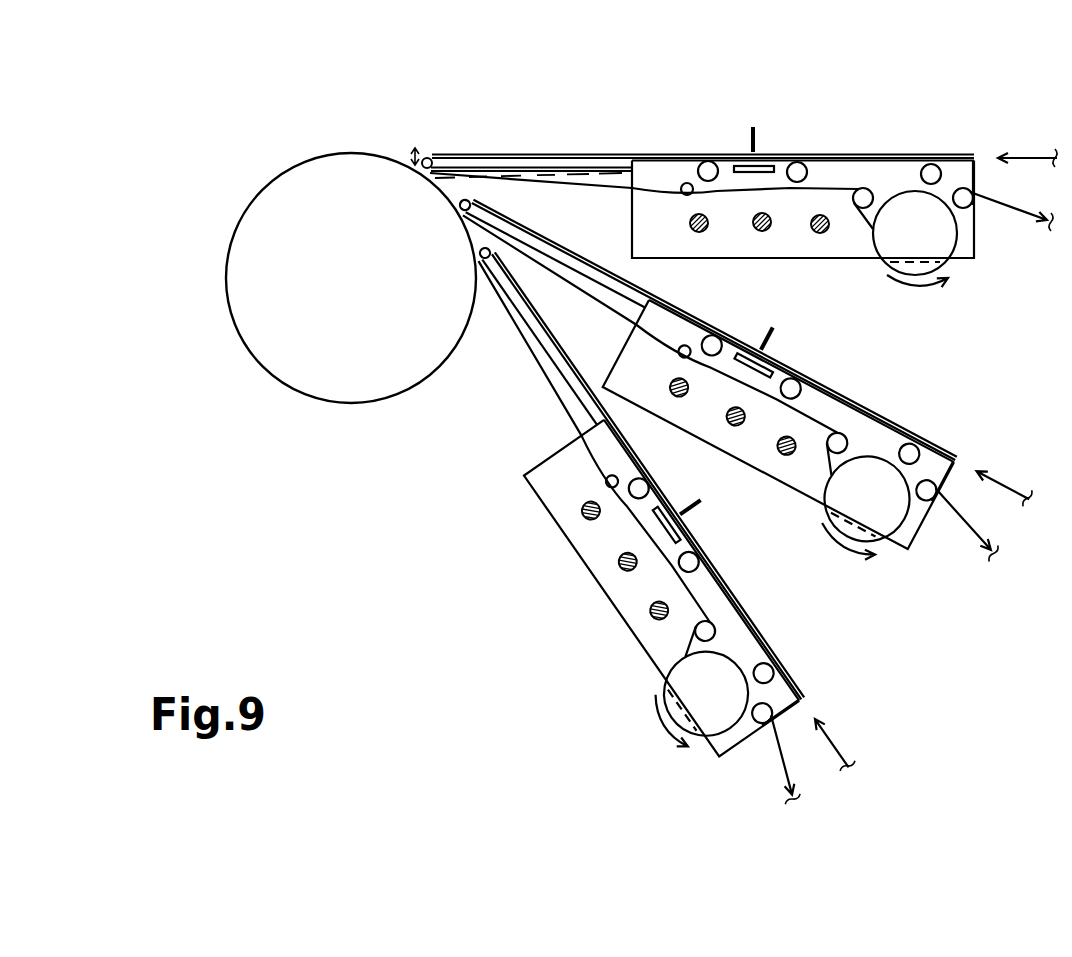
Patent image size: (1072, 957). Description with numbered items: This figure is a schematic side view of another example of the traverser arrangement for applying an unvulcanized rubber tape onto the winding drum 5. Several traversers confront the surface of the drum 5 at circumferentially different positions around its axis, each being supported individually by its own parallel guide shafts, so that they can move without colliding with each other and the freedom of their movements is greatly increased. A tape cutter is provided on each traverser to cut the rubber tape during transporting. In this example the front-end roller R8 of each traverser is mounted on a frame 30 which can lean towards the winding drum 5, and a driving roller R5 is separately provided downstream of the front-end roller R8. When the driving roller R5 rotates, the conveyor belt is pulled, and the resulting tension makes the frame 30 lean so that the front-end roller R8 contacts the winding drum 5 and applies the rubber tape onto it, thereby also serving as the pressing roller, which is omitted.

The winding drum 5 is at (336, 403).
The front-end roller R8 is at (429, 153).
The frame 30 is at (497, 153).
The driving roller R5 is at (933, 248).